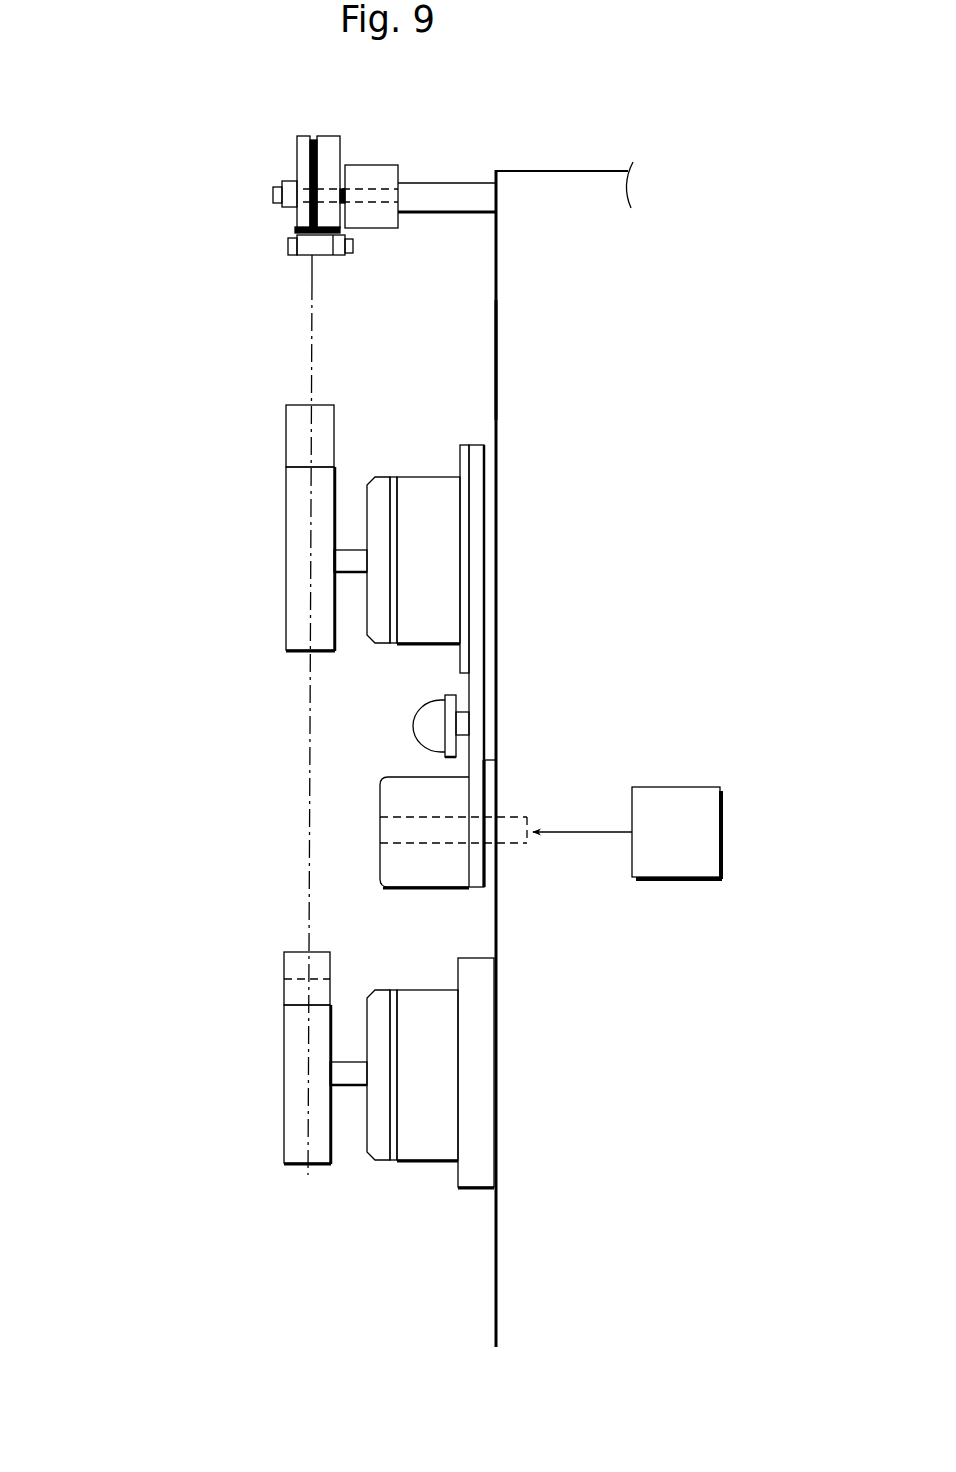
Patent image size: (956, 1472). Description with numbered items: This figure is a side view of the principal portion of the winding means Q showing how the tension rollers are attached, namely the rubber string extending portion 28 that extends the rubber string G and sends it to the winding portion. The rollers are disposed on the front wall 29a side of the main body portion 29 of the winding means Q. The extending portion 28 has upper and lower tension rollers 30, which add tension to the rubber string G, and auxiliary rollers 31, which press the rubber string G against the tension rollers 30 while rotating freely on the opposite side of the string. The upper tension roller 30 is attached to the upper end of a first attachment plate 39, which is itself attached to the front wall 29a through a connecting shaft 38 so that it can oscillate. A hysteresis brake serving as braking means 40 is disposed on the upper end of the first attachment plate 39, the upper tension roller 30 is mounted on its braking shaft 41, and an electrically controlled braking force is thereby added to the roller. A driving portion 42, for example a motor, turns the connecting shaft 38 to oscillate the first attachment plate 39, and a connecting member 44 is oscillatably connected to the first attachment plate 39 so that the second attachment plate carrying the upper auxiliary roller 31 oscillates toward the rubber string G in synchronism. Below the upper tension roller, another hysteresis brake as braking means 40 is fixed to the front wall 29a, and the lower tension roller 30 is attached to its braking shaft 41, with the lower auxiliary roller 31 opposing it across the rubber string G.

The rubber string extending portion 28 is at (178, 703).
The main body portion 29 is at (572, 170).
The front wall 29a is at (496, 358).
The tension roller 30 is at (283, 563).
The auxiliary roller 31 is at (293, 430).
The connecting shaft 38 is at (448, 843).
The first attachment plate 39 is at (478, 660).
The braking means 40 is at (419, 475).
The braking shaft 41 is at (351, 566).
The driving portion 42 is at (680, 810).
The connecting member 44 is at (410, 723).
The rubber string G is at (308, 802).
The winding means Q is at (170, 197).